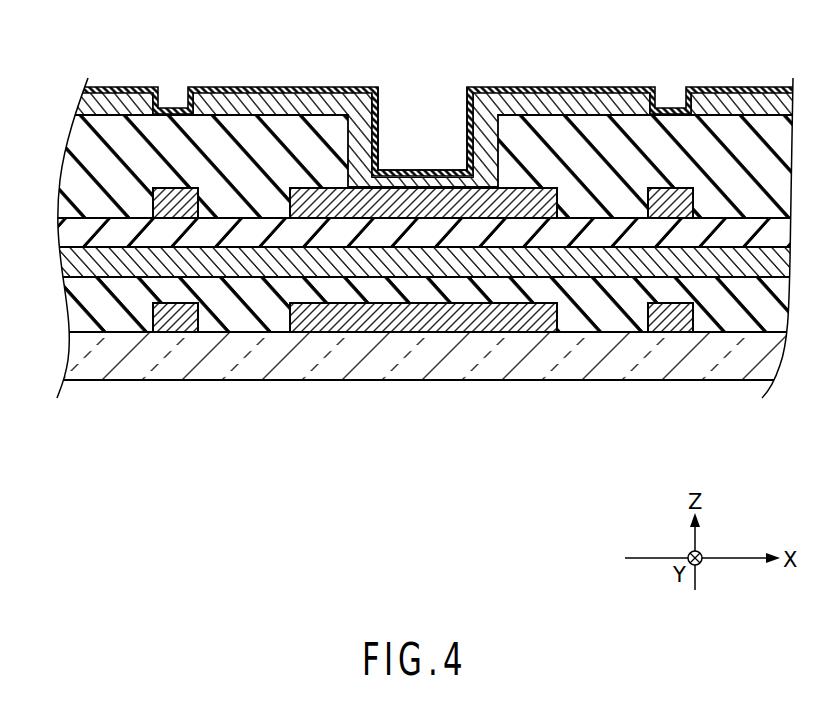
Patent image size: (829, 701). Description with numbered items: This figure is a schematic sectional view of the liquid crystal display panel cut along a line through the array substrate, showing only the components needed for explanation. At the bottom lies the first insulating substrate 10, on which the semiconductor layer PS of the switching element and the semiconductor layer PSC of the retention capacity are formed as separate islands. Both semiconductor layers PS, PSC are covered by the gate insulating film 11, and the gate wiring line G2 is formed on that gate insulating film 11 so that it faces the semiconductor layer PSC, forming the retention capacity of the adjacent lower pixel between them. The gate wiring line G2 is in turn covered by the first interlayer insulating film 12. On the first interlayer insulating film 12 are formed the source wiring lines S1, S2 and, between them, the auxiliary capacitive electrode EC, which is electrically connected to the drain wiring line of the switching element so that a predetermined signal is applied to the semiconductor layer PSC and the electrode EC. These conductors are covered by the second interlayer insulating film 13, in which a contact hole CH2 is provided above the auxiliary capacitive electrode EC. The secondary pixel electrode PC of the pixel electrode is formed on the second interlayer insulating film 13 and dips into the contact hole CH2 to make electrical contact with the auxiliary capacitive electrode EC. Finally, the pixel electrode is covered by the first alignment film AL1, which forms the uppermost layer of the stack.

The first insulating substrate 10 is at (575, 373).
The gate insulating film 11 is at (68, 325).
The first interlayer insulating film 12 is at (72, 230).
The second interlayer insulating film 13 is at (78, 160).
The gate wiring line G2 is at (72, 265).
The semiconductor layer PS is at (170, 333).
The semiconductor layer PSC is at (410, 333).
The source wiring line S1 is at (178, 188).
The source wiring line S2 is at (677, 190).
The auxiliary capacitive electrode EC is at (522, 195).
The secondary pixel electrode PC is at (265, 105).
The contact hole CH2 is at (336, 140).
The first alignment film AL1 is at (757, 92).